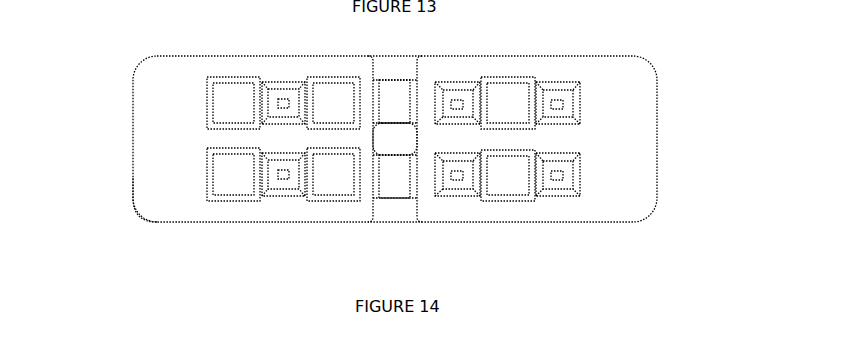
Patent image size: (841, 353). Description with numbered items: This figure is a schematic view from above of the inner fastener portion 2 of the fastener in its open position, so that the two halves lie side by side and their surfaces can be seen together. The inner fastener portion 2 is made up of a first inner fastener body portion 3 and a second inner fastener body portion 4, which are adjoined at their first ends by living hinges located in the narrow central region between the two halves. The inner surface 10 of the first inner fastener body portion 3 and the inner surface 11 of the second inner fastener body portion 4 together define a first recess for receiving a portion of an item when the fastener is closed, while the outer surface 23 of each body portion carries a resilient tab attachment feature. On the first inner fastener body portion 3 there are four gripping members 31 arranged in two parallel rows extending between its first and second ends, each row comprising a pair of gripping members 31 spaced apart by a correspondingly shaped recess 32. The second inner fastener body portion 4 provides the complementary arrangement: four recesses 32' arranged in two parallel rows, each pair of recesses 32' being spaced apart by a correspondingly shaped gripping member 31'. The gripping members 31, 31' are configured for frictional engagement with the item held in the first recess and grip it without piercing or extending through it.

The inner fastener portion 2 is at (128, 51).
The first inner fastener body portion 3 is at (622, 98).
The second inner fastener body portion 4 is at (173, 125).
The inner surface 10 is at (610, 154).
The inner surface 11 is at (197, 190).
The outer surface 23 is at (500, 99).
The gripping members 31 is at (562, 227).
The gripping member 31' is at (275, 226).
The recess 32 is at (596, 67).
The recesses 32' is at (186, 218).